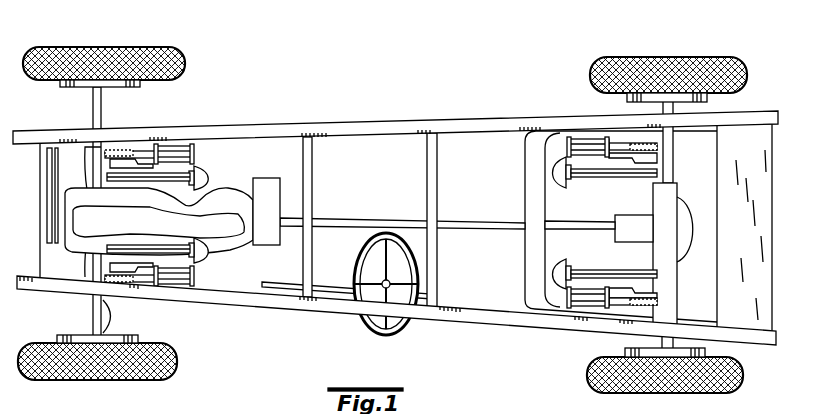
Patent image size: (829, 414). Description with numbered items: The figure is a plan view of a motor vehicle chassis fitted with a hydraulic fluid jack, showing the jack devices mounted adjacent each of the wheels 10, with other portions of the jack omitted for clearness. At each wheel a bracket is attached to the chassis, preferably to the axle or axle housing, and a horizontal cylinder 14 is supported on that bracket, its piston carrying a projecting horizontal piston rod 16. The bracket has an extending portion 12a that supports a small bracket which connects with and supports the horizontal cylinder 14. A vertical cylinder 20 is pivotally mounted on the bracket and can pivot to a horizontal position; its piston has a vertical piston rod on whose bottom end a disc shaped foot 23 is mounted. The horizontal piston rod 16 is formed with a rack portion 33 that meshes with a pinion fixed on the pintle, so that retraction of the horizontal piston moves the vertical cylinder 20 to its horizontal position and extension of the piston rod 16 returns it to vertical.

The wheel 10 is at (184, 56).
The extending portion 12a is at (136, 163).
The horizontal cylinder 14 is at (173, 147).
The horizontal piston rod 16 is at (127, 162).
The vertical cylinder 20 is at (188, 176).
The disc shaped foot 23 is at (213, 170).
The rack portion 33 is at (116, 150).